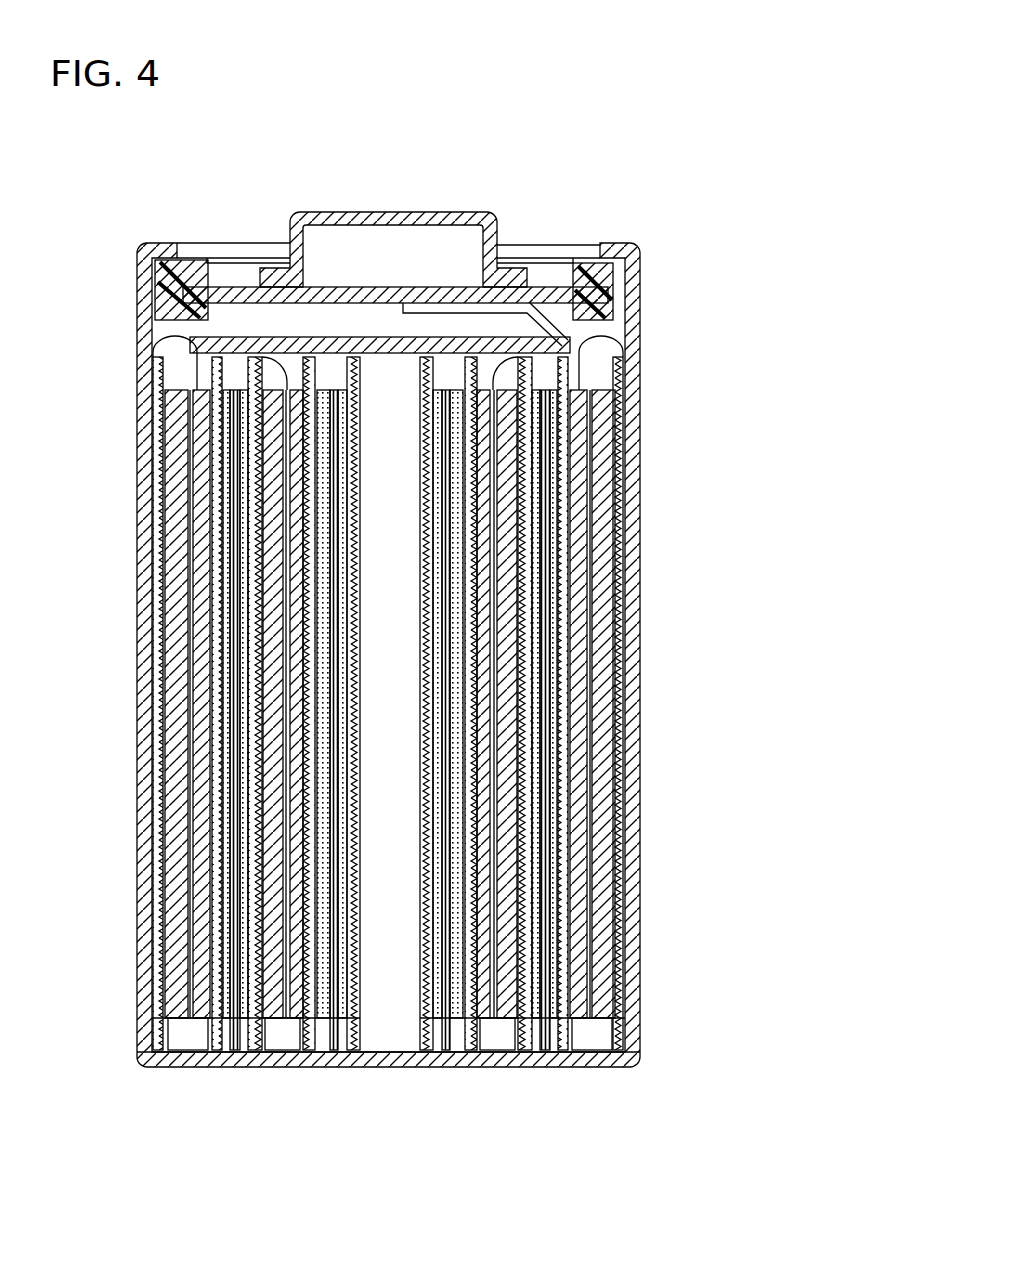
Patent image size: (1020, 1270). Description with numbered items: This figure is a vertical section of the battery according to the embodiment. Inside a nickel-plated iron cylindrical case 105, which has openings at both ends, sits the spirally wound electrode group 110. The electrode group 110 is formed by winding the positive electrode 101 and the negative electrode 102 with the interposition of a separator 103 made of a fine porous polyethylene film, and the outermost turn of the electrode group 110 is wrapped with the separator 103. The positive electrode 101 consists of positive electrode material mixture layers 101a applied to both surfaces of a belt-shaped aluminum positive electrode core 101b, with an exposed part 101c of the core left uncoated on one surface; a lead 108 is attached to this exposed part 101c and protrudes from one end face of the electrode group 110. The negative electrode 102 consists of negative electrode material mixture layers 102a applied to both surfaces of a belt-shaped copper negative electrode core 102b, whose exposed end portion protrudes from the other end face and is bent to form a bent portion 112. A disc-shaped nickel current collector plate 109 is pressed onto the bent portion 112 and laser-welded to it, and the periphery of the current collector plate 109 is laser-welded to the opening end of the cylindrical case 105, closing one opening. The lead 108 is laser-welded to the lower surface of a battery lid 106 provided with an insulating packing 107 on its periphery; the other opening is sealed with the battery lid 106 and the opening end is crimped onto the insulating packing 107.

The positive electrode 101 is at (748, 575).
The positive electrode material mixture layer 101a is at (598, 651).
The positive electrode core 101b is at (592, 606).
The exposed part 101c is at (222, 1056).
The negative electrode 102 is at (742, 848).
The negative electrode material mixture layer 102a is at (545, 921).
The negative electrode core 102b is at (540, 867).
The separator 103 is at (565, 801).
The cylindrical case 105 is at (640, 510).
The battery lid 106 is at (445, 215).
The insulating packing 107 is at (612, 297).
The lead 108 is at (347, 337).
The current collector plate 109 is at (150, 1066).
The electrode group 110 is at (825, 928).
The bent portion 112 is at (253, 1055).